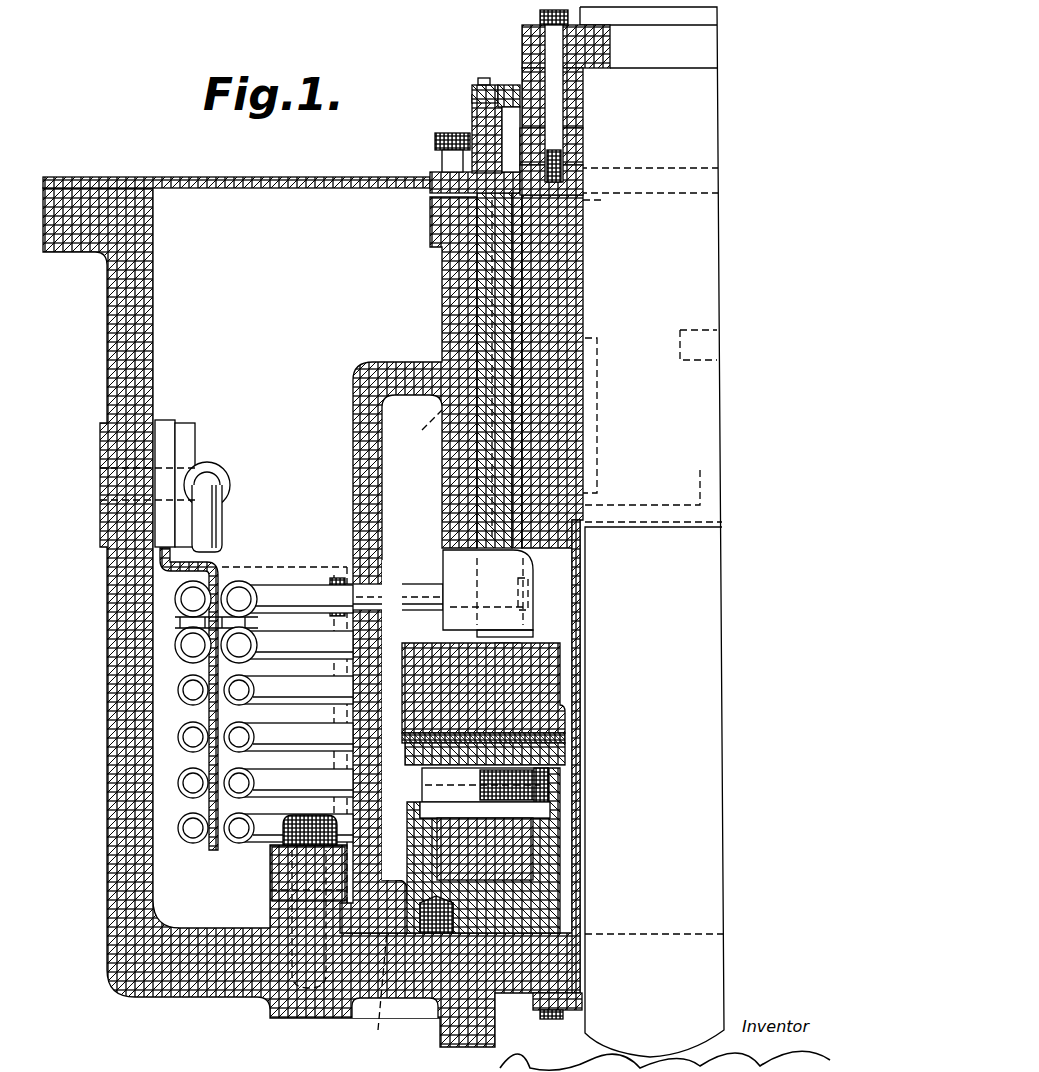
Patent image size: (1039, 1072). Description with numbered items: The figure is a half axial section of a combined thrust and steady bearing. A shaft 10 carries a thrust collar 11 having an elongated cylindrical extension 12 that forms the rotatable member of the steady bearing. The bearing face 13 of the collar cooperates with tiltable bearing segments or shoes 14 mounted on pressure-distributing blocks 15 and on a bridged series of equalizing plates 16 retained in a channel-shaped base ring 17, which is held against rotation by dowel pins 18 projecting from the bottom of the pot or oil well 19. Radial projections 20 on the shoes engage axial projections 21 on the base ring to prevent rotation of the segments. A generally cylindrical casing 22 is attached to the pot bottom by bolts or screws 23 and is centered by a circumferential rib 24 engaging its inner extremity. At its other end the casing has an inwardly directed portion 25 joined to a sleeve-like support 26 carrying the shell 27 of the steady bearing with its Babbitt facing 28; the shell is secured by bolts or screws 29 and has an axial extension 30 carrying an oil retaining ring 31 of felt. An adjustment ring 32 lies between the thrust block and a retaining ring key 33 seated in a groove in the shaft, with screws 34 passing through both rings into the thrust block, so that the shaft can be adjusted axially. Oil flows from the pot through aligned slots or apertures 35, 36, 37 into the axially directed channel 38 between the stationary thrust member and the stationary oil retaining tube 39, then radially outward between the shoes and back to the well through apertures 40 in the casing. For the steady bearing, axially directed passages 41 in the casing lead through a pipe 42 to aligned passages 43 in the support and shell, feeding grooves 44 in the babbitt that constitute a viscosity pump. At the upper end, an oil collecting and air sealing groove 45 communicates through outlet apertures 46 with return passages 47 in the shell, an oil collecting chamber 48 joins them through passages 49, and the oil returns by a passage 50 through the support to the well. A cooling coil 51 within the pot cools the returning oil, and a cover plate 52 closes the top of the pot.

The shaft 10 is at (705, 730).
The thrust collar 11 is at (540, 675).
The elongated cylindrical extension 12 is at (560, 300).
The bearing face 13 is at (565, 724).
The bearing segments or shoes 14 is at (560, 752).
The pressure-distributing blocks 15 is at (535, 786).
The equalizing plates 16 is at (505, 842).
The channel-shaped base ring 17 is at (545, 862).
The dowel pins 18 is at (455, 912).
The pot or oil well 19 is at (178, 985).
The radial projections 20 is at (345, 786).
The axial projections 21 is at (345, 742).
The casing 22 is at (363, 490).
The bolts or screws 23 is at (300, 832).
The circumferential rib 24 is at (345, 985).
The angularly and inwardly directed portion 25 is at (400, 374).
The sleeve-like support 26 is at (455, 295).
The shell 27 is at (490, 470).
The Babbitt facing 28 is at (520, 330).
The bolts or screws 29 is at (477, 118).
The axial extension 30 is at (475, 92).
The oil retaining ring 31 is at (505, 85).
The adjustment ring 32 is at (585, 92).
The retaining ring key 33 is at (615, 50).
The screws 34 is at (565, 120).
The slots or apertures 35 is at (285, 895).
The slots or apertures 36 is at (385, 988).
The slots or apertures 37 is at (520, 908).
The axially directed channel 38 is at (574, 805).
The oil retaining tube 39 is at (574, 920).
The apertures 40 is at (345, 700).
The axially directed passages 41 is at (388, 655).
The pipe 42 is at (405, 585).
The aligned passages 43 is at (478, 600).
The grooves 44 is at (530, 590).
The oil collecting and air sealing groove 45 is at (515, 175).
The outlet apertures 46 is at (608, 212).
The return passages 47 is at (485, 312).
The oil collecting chamber 48 is at (528, 150).
The passages 49 is at (432, 196).
The passage 50 is at (417, 430).
The cooling coil 51 is at (196, 842).
The cover plate 52 is at (240, 190).